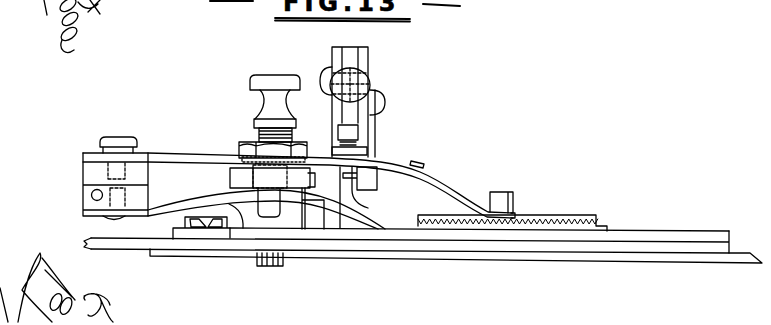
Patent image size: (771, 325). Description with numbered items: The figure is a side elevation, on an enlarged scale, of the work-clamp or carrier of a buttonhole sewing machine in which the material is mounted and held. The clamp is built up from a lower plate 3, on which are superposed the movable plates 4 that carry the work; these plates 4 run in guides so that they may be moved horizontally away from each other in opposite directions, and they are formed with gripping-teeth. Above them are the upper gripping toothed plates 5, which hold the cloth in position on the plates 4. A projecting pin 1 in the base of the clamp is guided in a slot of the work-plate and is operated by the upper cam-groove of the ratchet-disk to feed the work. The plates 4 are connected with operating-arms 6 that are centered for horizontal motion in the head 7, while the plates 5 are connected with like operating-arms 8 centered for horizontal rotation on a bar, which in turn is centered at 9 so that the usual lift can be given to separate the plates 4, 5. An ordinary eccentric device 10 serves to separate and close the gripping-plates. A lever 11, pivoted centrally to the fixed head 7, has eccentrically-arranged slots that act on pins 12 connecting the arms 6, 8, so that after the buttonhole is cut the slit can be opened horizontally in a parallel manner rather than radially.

The projecting pin 1 is at (270, 257).
The lower plate 3 is at (487, 241).
The movable plate 4 is at (530, 231).
The upper gripping toothed plate 5 is at (517, 221).
The operating-arm 6 is at (143, 213).
The head 7 is at (134, 188).
The operating-arm 8 is at (177, 161).
The bar center 9 is at (98, 201).
The eccentric device 10 is at (352, 90).
The lever 11 is at (233, 177).
The pin 12 is at (272, 152).